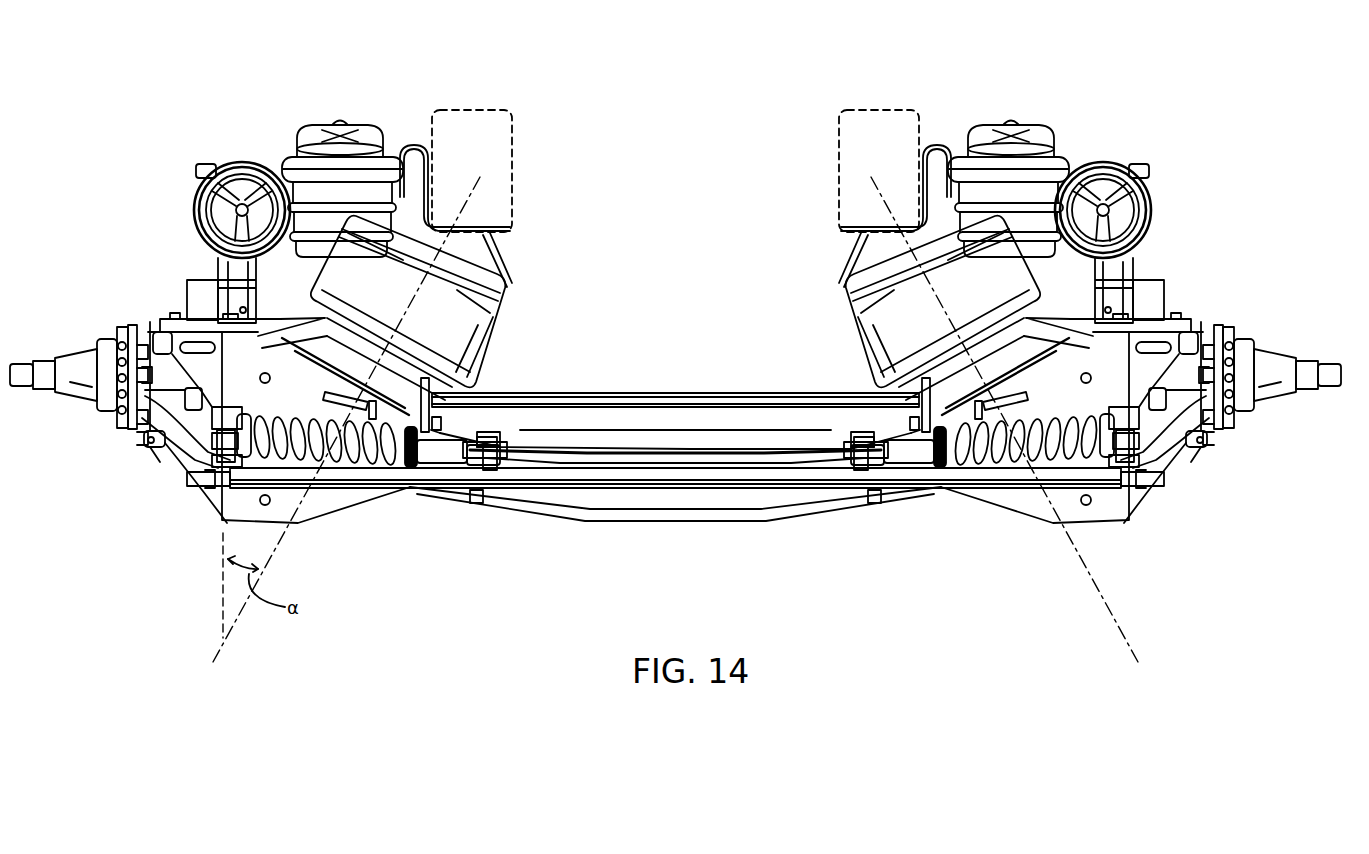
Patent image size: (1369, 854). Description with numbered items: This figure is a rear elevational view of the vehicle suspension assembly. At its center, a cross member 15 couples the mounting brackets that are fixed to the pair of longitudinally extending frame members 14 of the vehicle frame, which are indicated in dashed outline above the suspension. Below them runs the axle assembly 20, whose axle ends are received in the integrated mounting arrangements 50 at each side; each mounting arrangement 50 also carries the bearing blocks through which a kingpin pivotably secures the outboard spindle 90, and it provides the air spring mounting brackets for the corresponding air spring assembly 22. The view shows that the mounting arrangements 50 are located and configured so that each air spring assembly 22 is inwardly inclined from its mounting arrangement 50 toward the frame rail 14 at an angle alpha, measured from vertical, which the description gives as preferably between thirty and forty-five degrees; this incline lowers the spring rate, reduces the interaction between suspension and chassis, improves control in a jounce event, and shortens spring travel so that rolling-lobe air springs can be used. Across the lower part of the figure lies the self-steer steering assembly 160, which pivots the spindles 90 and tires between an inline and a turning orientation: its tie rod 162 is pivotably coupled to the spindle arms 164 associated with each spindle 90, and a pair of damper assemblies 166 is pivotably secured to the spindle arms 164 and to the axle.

The frame member 14 is at (466, 107).
The cross member 15 is at (608, 393).
The axle assembly 20 is at (652, 530).
The air spring assembly 22 is at (511, 329).
The mounting arrangement 50 is at (357, 523).
The spindle 90 is at (83, 342).
The steering assembly 160 is at (730, 500).
The tie rod 162 is at (540, 480).
The spindle arm 164 is at (160, 450).
The damper assembly 166 is at (387, 457).